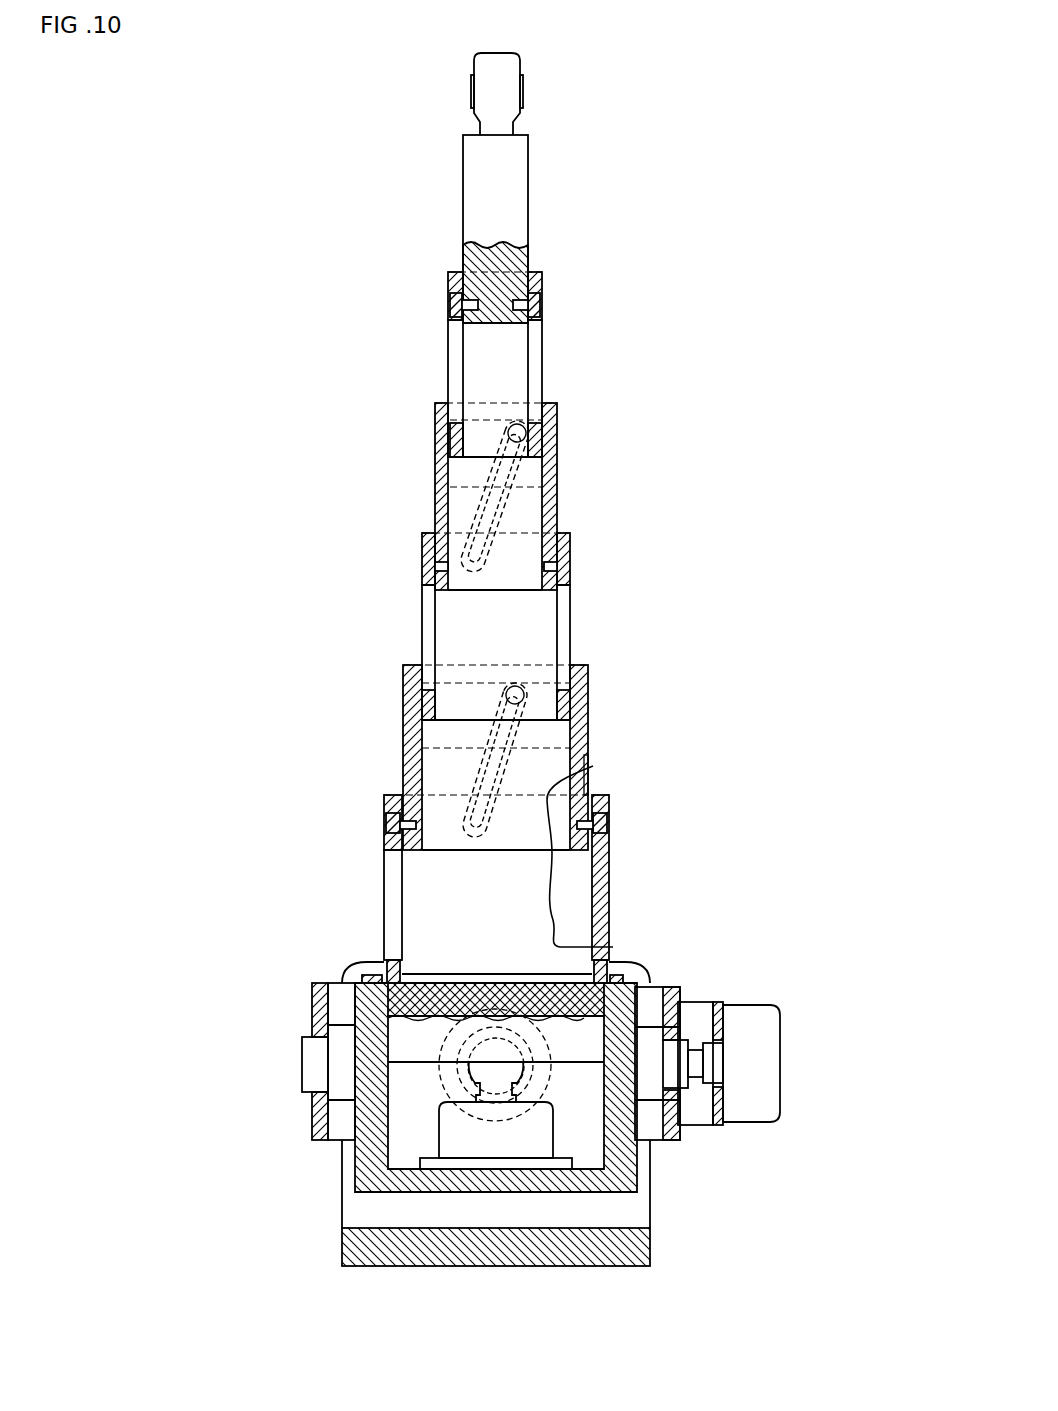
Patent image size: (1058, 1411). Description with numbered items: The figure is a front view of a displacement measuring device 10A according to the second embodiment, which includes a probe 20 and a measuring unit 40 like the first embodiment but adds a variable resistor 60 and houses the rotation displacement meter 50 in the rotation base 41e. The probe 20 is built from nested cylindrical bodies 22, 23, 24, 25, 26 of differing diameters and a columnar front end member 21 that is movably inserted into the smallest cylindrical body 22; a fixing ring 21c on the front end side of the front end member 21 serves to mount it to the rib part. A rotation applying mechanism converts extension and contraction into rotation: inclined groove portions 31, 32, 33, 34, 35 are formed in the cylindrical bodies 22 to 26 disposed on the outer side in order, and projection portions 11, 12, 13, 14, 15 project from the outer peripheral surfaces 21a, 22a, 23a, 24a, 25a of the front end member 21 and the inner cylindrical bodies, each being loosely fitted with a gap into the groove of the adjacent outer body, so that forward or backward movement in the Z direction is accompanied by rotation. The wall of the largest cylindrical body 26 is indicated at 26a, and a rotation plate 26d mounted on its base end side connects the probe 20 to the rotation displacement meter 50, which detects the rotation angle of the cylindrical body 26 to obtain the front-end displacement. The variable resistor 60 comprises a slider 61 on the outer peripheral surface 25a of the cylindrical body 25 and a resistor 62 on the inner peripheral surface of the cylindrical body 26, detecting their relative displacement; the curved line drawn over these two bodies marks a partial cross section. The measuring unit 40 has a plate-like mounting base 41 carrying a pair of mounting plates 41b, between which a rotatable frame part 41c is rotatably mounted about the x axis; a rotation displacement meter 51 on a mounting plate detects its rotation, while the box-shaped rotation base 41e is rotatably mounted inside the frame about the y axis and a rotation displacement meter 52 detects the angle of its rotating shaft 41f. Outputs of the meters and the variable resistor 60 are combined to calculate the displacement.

The displacement measuring device 10A is at (263, 290).
The projection portion 11 is at (450, 303).
The projection portion 12 is at (460, 424).
The projection portion 13 is at (425, 565).
The projection portion 14 is at (432, 693).
The projection portion 15 is at (393, 826).
The probe 20 is at (353, 394).
The front end member 21 is at (541, 188).
The outer peripheral surface 21a is at (530, 178).
The fixing ring 21c is at (508, 90).
The cylindrical body 22 is at (504, 364).
The outer peripheral surface 22a is at (545, 318).
The cylindrical body 23 is at (513, 496).
The outer peripheral surface 23a is at (560, 455).
The cylindrical body 24 is at (507, 626).
The outer peripheral surface 24a is at (575, 582).
The cylindrical body 25 is at (518, 757).
The outer peripheral surface 25a is at (590, 695).
The cylindrical body 26 is at (482, 911).
The fifth tube wall 26a is at (612, 892).
The rotation plate 26d is at (405, 1000).
The inclined groove portion 31 is at (448, 346).
The inclined groove portion 32 is at (470, 487).
The inclined groove portion 33 is at (428, 625).
The inclined groove portion 34 is at (498, 748).
The inclined groove portion 35 is at (392, 883).
The measuring unit 40 is at (544, 1122).
The mounting base 41 is at (352, 1252).
The mounting plates 41b is at (355, 1207).
The rotatable frame part 41c is at (312, 1118).
The rotation base 41e is at (400, 1180).
The rotating shaft 41f is at (650, 1088).
The rotation displacement meter 50 is at (498, 1148).
The rotation displacement meter 51 is at (565, 1078).
The rotation displacement meter 52 is at (754, 998).
The variable resistor 60 is at (643, 851).
The slider 61 is at (590, 763).
The resistor 62 is at (697, 768).